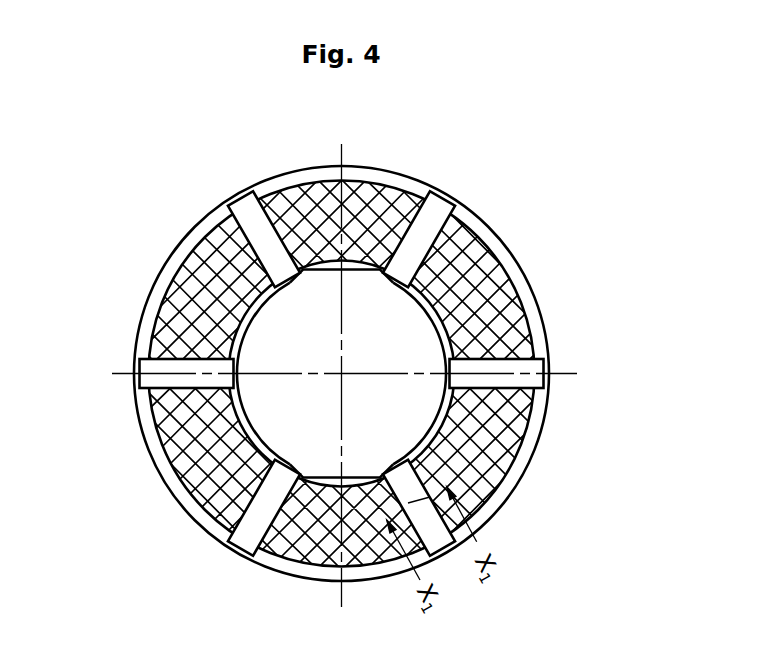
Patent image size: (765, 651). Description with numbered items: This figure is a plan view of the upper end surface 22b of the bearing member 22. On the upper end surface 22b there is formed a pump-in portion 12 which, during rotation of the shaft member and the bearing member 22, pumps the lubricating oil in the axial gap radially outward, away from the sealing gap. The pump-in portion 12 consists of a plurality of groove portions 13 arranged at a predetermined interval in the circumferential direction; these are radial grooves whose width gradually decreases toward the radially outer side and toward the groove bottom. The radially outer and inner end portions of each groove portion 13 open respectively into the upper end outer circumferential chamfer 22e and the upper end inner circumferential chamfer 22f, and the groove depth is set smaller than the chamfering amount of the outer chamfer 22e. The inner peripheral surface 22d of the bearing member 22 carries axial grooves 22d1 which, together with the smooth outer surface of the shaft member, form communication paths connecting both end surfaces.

The pump-in portion 12 is at (519, 394).
The groove portions 13 is at (437, 207).
The bearing member 22 is at (339, 378).
The upper end surface 22b is at (185, 492).
The inner peripheral surface 22d is at (420, 293).
The axial grooves 22d1 is at (438, 433).
The upper end outer circumferential chamfer 22e is at (198, 230).
The upper end inner circumferential chamfer 22f is at (252, 312).